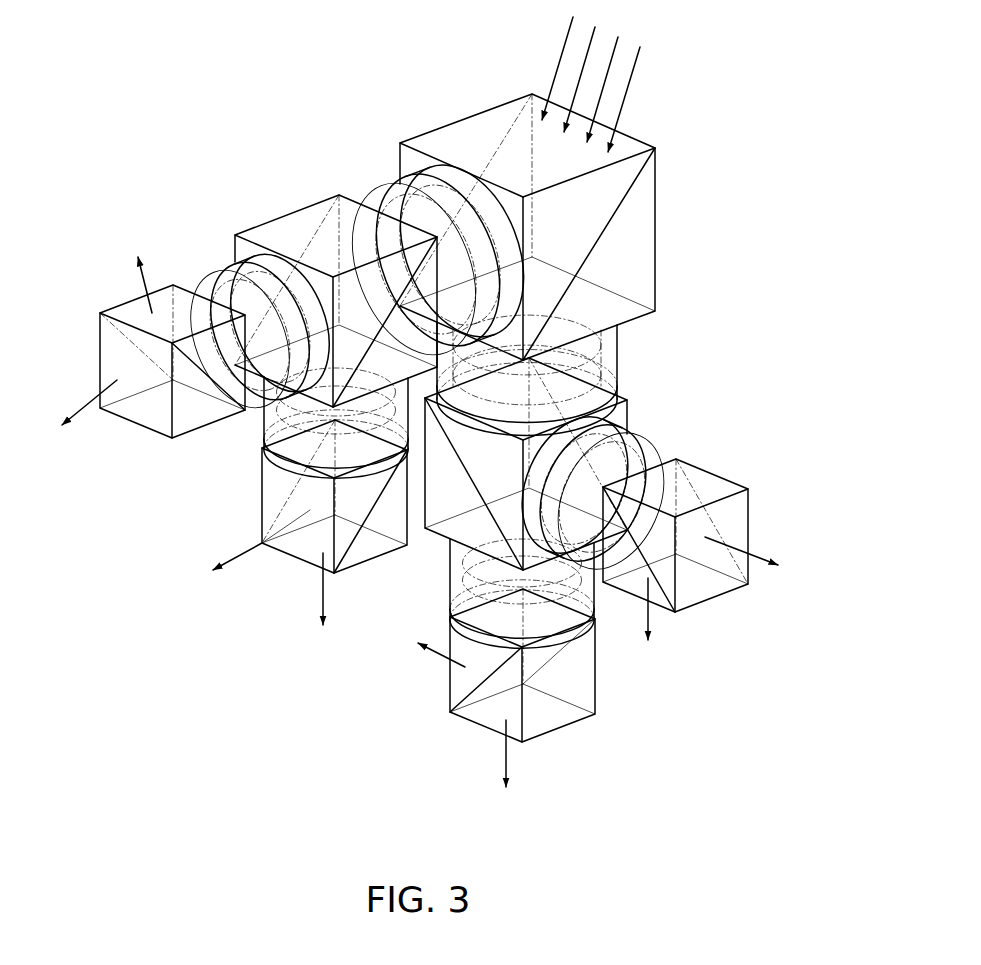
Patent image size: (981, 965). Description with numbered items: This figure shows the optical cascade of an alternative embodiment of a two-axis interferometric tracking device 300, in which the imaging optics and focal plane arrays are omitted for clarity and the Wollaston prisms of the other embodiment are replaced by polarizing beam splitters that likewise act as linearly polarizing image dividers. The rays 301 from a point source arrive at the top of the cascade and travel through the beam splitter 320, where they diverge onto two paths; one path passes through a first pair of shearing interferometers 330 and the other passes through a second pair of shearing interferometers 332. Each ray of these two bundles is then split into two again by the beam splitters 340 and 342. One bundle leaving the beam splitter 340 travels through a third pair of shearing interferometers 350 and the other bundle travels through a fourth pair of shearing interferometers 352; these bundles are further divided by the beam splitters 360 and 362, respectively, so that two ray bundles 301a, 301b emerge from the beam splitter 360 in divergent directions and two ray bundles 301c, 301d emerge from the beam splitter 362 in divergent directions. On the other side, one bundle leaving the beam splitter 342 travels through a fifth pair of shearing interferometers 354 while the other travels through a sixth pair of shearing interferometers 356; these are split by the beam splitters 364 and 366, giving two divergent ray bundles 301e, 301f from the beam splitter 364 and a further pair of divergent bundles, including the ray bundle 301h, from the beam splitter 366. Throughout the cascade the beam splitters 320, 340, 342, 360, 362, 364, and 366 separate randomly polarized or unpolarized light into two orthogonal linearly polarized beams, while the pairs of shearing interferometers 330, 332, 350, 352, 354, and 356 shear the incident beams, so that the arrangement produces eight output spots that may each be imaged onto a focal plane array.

The two-axis interferometric tracking device 300 is at (673, 88).
The rays 301 is at (591, 79).
The ray bundle 301a is at (138, 269).
The ray bundle 301b is at (69, 420).
The ray bundle 301c is at (243, 553).
The ray bundle 301d is at (323, 602).
The ray bundle 301e is at (423, 644).
The ray bundle 301f is at (506, 768).
The ray bundle 301h is at (731, 604).
The beam splitter 320 is at (633, 232).
The first pair of shearing interferometers 330 is at (395, 190).
The second pair of shearing interferometers 332 is at (607, 360).
The beam splitter 340 is at (297, 229).
The beam splitter 342 is at (447, 490).
The third pair of shearing interferometers 350 is at (248, 280).
The fourth pair of shearing interferometers 352 is at (278, 442).
The fifth pair of shearing interferometers 354 is at (543, 607).
The sixth pair of shearing interferometers 356 is at (600, 448).
The beam splitter 360 is at (128, 312).
The beam splitter 362 is at (273, 500).
The beam splitter 364 is at (535, 710).
The beam splitter 366 is at (730, 517).